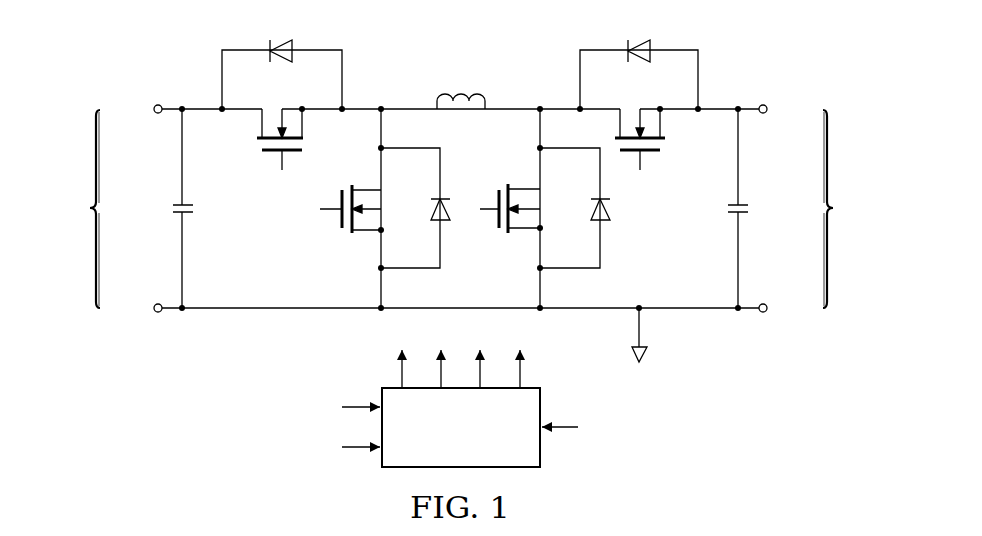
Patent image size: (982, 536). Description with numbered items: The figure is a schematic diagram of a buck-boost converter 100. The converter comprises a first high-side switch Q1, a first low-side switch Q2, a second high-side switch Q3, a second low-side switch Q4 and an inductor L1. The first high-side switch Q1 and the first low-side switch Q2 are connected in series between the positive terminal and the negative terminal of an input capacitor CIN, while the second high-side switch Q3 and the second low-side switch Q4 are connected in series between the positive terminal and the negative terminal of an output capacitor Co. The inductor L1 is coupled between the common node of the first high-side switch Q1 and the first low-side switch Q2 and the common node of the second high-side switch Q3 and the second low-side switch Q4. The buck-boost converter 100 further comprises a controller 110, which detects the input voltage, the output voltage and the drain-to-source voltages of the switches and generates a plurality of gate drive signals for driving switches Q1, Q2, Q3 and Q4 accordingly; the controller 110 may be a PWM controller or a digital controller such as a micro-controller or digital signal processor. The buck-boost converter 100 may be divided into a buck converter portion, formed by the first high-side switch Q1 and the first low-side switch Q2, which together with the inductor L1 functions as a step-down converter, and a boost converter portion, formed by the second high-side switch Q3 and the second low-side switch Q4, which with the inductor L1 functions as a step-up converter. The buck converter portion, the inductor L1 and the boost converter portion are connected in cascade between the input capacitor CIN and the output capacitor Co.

The buck-boost converter 100 is at (161, 69).
The controller 110 is at (478, 441).
The first high-side switch Q1 is at (282, 105).
The first low-side switch Q2 is at (385, 208).
The second high-side switch Q3 is at (639, 105).
The second low-side switch Q4 is at (545, 208).
The inductor L1 is at (461, 89).
The input capacitor CIN is at (164, 208).
The output capacitor Co is at (753, 208).